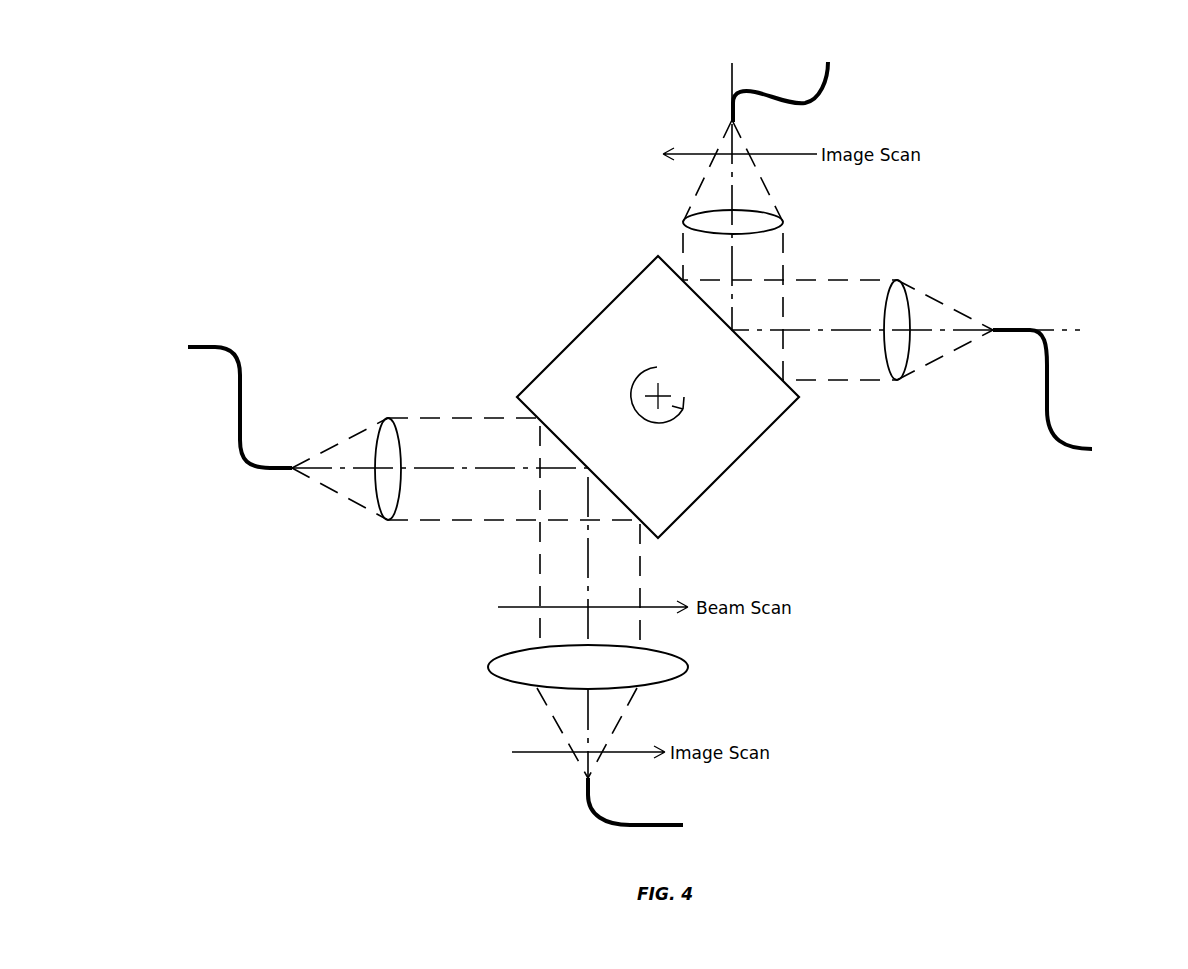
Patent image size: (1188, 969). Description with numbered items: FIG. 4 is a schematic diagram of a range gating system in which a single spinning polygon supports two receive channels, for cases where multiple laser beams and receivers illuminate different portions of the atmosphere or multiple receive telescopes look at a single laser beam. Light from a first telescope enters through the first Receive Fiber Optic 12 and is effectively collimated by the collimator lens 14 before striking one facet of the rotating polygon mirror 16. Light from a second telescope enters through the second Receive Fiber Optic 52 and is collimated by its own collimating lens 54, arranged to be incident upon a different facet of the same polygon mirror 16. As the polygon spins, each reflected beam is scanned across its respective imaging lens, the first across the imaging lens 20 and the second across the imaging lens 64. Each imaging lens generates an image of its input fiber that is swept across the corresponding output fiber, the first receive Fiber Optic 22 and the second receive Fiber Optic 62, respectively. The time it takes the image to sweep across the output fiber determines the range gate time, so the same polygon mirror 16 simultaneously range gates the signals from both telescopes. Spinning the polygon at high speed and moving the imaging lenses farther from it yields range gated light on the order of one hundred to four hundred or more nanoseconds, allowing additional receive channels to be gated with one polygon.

The receive fiber optic 12 is at (235, 420).
The collimator lens 14 is at (388, 418).
The spinning polygon mirror 16 is at (757, 438).
The imaging lens 20 is at (688, 667).
The output fiber 22 is at (623, 827).
The second receive fiber optic 52 is at (758, 90).
The collimating lens 54 is at (783, 222).
The second receive fiber optic 62 is at (1043, 423).
The imaging lens 64 is at (897, 380).